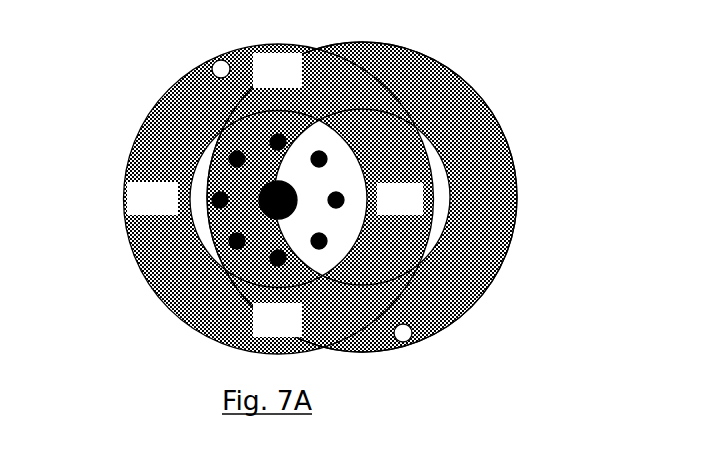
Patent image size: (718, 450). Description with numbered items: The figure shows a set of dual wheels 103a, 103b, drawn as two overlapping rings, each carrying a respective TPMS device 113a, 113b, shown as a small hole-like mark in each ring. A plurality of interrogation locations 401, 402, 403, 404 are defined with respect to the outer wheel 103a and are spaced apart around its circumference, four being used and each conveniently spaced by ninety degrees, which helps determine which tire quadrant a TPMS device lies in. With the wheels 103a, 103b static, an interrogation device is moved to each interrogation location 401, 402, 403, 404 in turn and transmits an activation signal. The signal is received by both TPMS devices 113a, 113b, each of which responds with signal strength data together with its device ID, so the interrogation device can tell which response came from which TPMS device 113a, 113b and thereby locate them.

The outer wheel 103a is at (128, 121).
The wheel 103b is at (534, 190).
The TPMS device 113a is at (200, 50).
The TPMS device 113b is at (434, 337).
The interrogation location 401 is at (277, 70).
The interrogation location 402 is at (400, 199).
The interrogation location 403 is at (277, 320).
The interrogation location 404 is at (152, 198).